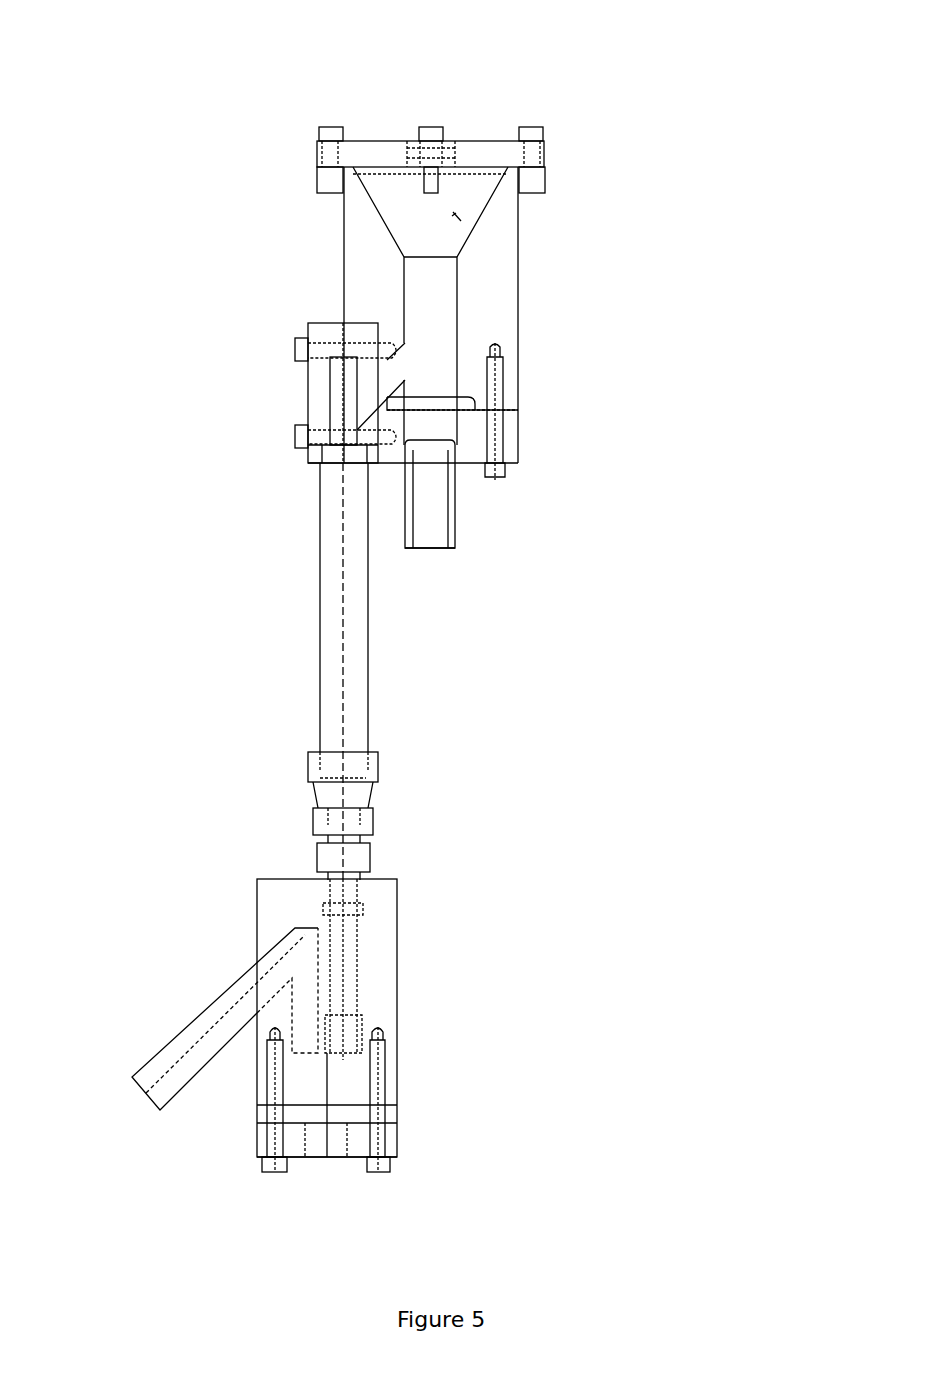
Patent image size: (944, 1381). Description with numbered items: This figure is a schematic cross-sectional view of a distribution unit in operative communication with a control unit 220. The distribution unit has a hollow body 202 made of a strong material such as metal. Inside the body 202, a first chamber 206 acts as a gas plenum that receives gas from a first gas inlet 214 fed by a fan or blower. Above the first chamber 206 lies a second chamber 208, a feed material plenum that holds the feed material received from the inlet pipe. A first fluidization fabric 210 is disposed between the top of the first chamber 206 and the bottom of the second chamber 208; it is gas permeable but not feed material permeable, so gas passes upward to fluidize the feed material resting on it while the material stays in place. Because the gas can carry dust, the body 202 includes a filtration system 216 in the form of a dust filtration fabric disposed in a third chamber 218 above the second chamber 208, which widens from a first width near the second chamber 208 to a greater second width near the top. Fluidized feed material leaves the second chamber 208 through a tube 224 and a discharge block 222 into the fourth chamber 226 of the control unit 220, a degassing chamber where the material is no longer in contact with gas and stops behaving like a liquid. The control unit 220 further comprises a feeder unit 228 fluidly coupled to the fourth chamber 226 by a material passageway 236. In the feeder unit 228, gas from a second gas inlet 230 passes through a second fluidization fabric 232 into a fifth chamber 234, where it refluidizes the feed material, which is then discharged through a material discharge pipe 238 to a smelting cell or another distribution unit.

The body 202 is at (342, 213).
The first chamber 206 is at (437, 429).
The second chamber 208 is at (441, 307).
The first fluidization fabric 210 is at (469, 401).
The first gas inlet 214 is at (430, 553).
The filtration system 216 is at (369, 139).
The third chamber 218 is at (458, 218).
The control unit 220 is at (272, 557).
The discharge block 222 is at (302, 412).
The tube 224 is at (378, 388).
The fourth chamber 226 is at (341, 617).
The feeder unit 228 is at (399, 1000).
The second gas inlet 230 is at (332, 1153).
The second fluidization fabric 232 is at (394, 1113).
The fifth chamber 234 is at (343, 1083).
The material passageway 236 is at (356, 950).
The material discharge pipe 238 is at (224, 1011).